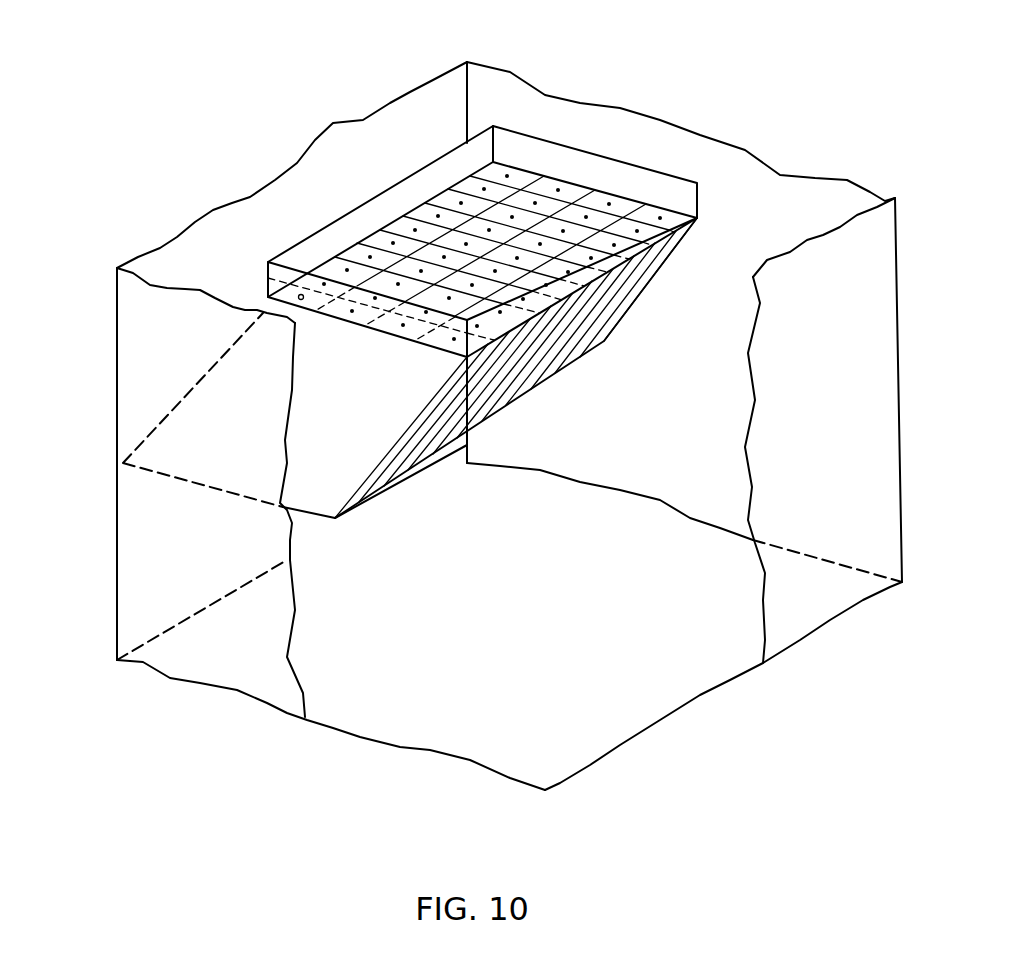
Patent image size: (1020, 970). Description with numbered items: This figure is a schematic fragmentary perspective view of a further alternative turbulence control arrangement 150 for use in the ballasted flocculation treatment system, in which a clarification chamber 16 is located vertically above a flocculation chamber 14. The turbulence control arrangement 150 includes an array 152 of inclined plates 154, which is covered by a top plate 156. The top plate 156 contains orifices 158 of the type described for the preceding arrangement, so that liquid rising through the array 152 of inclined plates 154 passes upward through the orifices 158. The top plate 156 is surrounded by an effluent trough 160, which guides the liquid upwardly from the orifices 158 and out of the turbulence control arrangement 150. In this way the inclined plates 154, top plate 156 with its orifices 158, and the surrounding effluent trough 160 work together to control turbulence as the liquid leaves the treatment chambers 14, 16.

The flocculation chamber 14 is at (140, 586).
The clarification chamber 16 is at (494, 90).
The turbulence control arrangement 150 is at (441, 190).
The array 152 is at (318, 520).
The inclined plates 154 is at (604, 341).
The top plate 156 is at (357, 252).
The orifices 158 is at (440, 215).
The effluent trough 160 is at (440, 157).